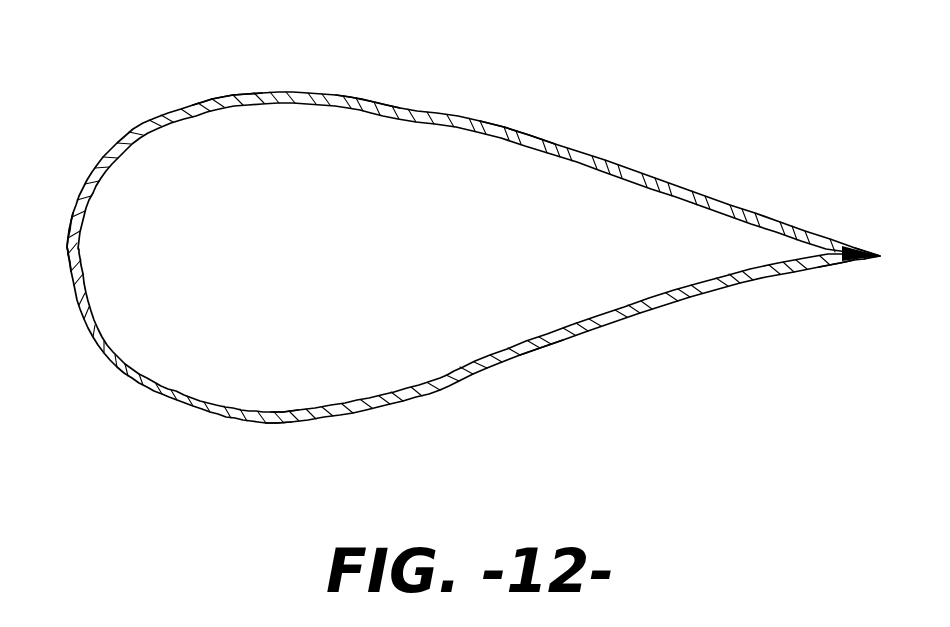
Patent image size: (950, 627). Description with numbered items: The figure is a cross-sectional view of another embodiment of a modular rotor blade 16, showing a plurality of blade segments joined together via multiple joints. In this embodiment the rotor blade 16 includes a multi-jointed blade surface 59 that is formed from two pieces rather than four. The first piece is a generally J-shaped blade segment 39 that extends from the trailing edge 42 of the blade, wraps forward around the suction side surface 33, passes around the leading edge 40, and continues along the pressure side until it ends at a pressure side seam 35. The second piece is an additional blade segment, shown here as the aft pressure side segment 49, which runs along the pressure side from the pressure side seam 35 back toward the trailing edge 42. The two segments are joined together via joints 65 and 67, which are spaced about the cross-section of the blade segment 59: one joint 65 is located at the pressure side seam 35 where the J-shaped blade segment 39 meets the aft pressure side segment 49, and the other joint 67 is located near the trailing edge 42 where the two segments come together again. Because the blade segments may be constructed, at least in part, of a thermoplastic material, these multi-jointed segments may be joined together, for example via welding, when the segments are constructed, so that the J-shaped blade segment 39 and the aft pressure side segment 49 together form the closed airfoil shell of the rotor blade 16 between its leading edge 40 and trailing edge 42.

The rotor blade 16 is at (473, 217).
The suction side surface 33 is at (517, 123).
The pressure side seam 35 is at (275, 418).
The J-shaped blade segment 39 is at (234, 96).
The leading edge 40 is at (67, 255).
The trailing edge 42 is at (882, 257).
The aft pressure side segment 49 is at (550, 347).
The multi-jointed blade surface 59 is at (368, 98).
The joint 65 is at (282, 418).
The joint 67 is at (848, 262).